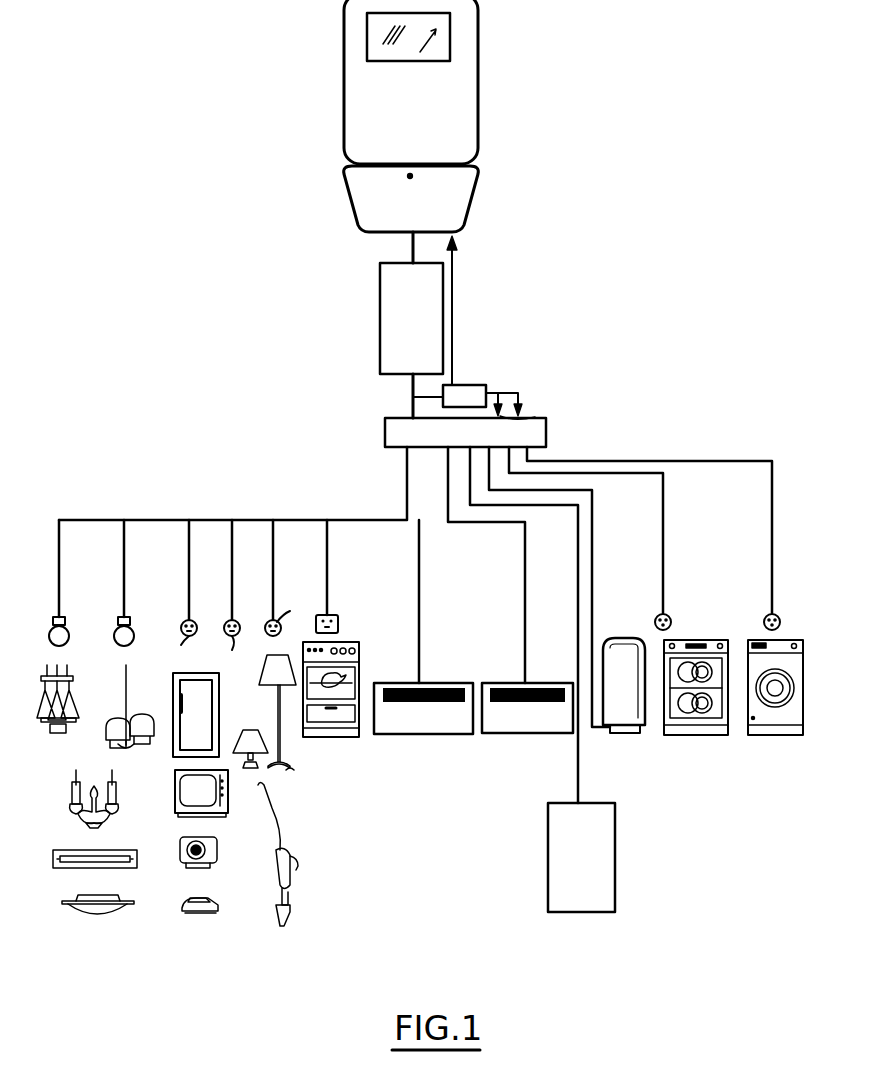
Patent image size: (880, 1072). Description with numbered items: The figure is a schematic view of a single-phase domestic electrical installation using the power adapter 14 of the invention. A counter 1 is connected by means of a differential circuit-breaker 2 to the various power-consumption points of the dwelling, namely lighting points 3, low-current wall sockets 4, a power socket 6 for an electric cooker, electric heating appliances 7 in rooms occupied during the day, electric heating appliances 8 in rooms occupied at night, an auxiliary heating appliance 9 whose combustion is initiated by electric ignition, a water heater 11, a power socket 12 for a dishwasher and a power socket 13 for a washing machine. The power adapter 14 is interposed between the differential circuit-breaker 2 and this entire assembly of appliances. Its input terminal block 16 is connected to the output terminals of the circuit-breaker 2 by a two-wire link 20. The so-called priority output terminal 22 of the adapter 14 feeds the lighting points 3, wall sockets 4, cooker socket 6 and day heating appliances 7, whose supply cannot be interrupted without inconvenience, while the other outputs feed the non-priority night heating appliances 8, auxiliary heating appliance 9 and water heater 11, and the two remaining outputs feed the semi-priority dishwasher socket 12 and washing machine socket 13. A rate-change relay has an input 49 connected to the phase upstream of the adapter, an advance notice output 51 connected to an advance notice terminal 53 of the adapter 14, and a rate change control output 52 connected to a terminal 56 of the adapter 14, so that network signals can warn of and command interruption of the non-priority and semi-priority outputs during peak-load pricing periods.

The counter 1 is at (333, 84).
The differential circuit-breaker 2 is at (379, 316).
The lighting points 3 is at (145, 926).
The low-current wall sockets 4 is at (227, 627).
The power socket for an electric cooker 6 is at (340, 624).
The electric heating appliances 7 is at (411, 718).
The electric heating appliances 8 is at (522, 717).
The auxiliary heating appliance 9 is at (582, 892).
The water heater 11 is at (622, 708).
The power socket for a dish-washer 12 is at (671, 617).
The power socket for a washing machine 13 is at (779, 617).
The power adapter 14 is at (386, 431).
The input terminal block 16 is at (412, 409).
The two-wire link 20 is at (411, 378).
The priority phase terminal 22 is at (404, 448).
The input 49 is at (432, 396).
The advance notice output 51 is at (520, 397).
The rate change control output 52 is at (504, 392).
The advance notice terminal 53 is at (534, 418).
The terminal 56 is at (524, 410).